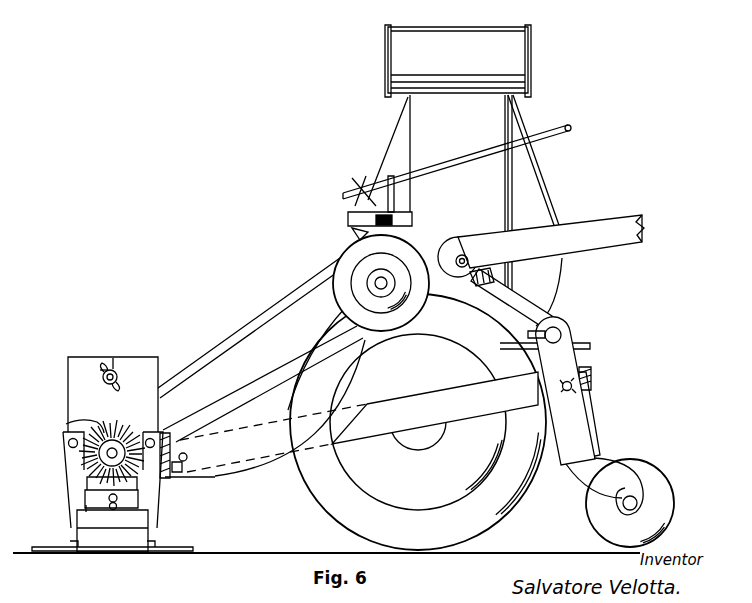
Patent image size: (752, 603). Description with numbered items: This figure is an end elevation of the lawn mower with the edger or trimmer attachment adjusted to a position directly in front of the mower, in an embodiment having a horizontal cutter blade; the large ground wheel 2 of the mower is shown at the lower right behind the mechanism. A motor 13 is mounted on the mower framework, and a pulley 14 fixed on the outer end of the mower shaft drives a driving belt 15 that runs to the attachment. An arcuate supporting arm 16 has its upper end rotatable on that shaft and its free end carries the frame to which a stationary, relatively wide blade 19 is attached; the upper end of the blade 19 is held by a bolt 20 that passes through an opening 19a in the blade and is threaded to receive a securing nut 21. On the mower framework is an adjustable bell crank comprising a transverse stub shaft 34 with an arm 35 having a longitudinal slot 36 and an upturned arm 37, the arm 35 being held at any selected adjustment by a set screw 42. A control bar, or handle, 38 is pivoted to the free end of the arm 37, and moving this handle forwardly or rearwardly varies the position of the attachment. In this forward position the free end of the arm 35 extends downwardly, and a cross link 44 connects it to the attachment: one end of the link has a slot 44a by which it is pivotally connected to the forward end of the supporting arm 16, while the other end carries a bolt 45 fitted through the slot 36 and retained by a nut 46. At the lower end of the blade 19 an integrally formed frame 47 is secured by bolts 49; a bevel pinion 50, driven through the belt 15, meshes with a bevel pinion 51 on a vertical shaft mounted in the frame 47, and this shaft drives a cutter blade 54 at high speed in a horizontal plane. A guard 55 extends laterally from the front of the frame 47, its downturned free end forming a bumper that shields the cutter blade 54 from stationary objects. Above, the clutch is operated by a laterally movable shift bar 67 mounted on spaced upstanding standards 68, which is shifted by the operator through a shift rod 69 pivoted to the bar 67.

The ground wheel 2 is at (530, 492).
The motor 13 is at (505, 113).
The pulley 14 is at (338, 297).
The driving belt 15 is at (279, 299).
The arcuate supporting arm 16 is at (291, 470).
The stationary blade 19 is at (152, 357).
The opening 19a is at (113, 358).
The bolt 20 is at (104, 377).
The securing nut 21 is at (104, 370).
The transverse stub shaft 34 is at (558, 323).
The arm 35 is at (590, 346).
The longitudinal slot 36 is at (588, 432).
The arm 37 is at (493, 288).
The control bar 38 is at (618, 226).
The set screw 42 is at (541, 328).
The cross link 44 is at (467, 420).
The slot 44a is at (180, 478).
The bolt 45 is at (571, 390).
The retaining nut 46 is at (592, 380).
The frame 47 is at (62, 463).
The bolts 49 is at (68, 443).
The bevel pinion 50 is at (68, 424).
The bevel pinion 51 is at (80, 478).
The cutter blade 54 is at (50, 547).
The guard 55 is at (148, 530).
The shift bar 67 is at (412, 214).
The standards 68 is at (353, 234).
The shift rod 69 is at (566, 134).